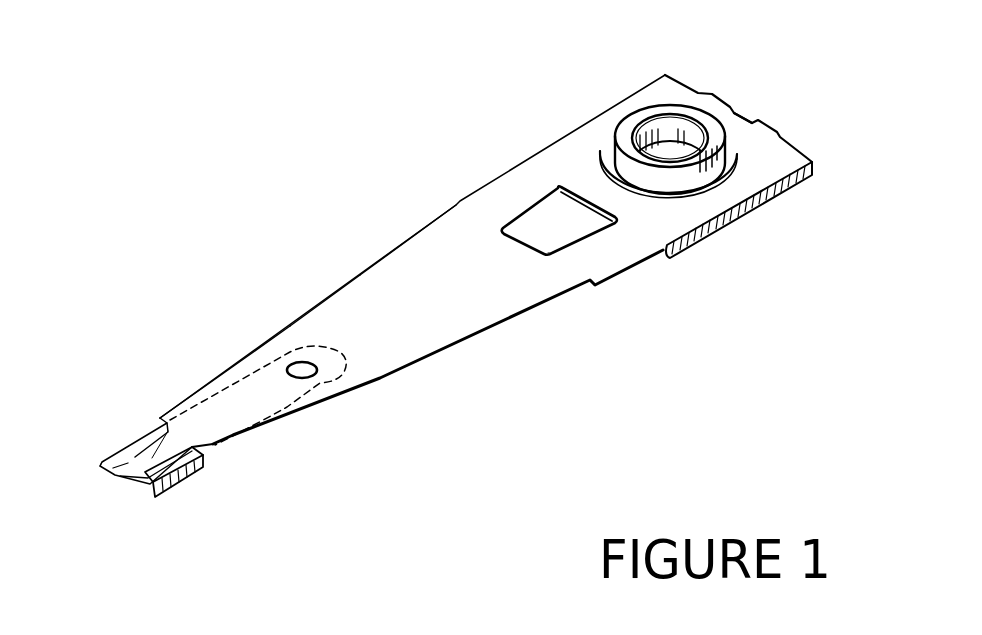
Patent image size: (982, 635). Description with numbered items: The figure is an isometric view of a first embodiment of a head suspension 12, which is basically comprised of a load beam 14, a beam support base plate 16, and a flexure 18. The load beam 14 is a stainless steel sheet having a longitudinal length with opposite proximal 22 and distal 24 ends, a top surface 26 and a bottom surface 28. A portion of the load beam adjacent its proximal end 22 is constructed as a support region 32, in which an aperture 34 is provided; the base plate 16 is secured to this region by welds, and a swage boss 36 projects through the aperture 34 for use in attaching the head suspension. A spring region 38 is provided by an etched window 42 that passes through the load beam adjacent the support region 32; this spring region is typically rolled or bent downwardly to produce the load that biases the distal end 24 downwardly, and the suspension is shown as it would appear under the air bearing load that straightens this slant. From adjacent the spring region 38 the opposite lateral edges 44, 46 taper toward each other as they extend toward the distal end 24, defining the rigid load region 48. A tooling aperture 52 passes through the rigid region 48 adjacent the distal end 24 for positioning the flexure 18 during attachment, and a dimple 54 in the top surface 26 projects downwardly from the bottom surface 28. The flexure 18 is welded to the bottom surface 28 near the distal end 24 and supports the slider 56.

The head suspension 12 is at (393, 202).
The load beam 14 is at (457, 315).
The beam support base plate 16 is at (743, 212).
The flexure 18 is at (200, 450).
The proximal end 22 is at (743, 117).
The distal end 24 is at (126, 498).
The top surface 26 is at (425, 260).
The bottom surface 28 is at (390, 337).
The support region 32 is at (783, 161).
The aperture 34 is at (628, 106).
The swage boss 36 is at (648, 112).
The spring region 38 is at (513, 188).
The etched window 42 is at (592, 235).
The lateral edge 44 is at (327, 293).
The lateral edge 46 is at (377, 383).
The rigid load region 48 is at (320, 333).
The tooling aperture 52 is at (293, 378).
The dimple 54 is at (152, 458).
The slider 56 is at (175, 482).